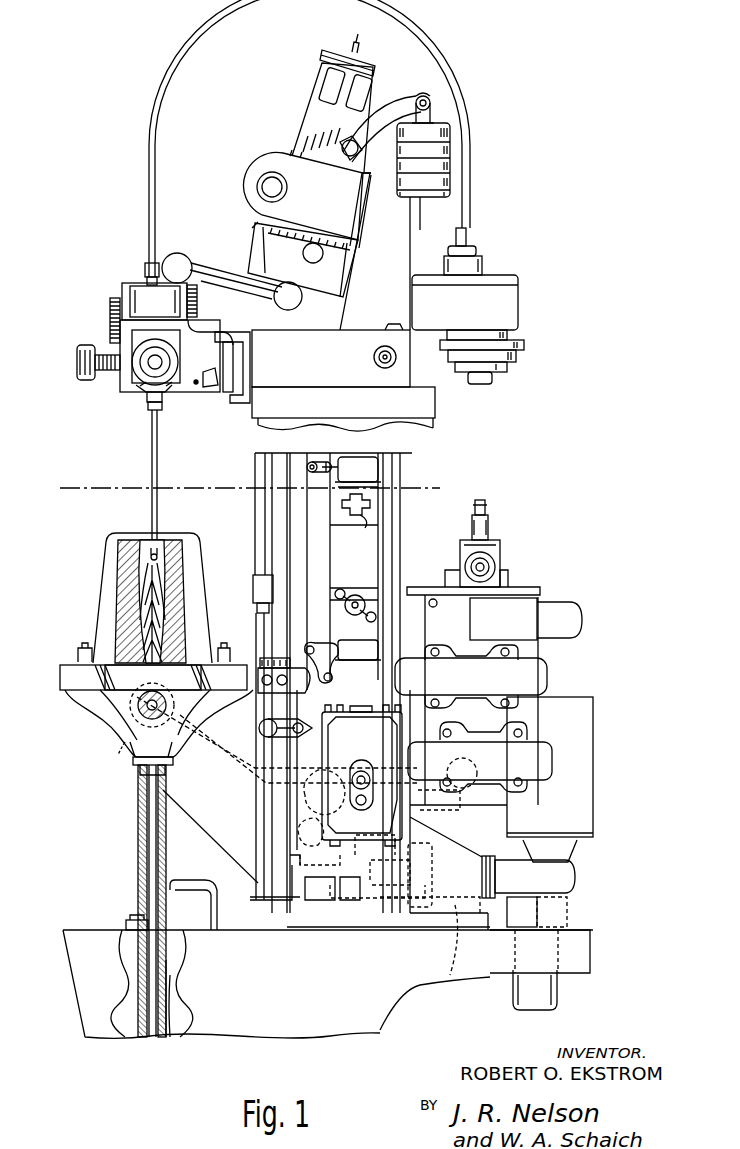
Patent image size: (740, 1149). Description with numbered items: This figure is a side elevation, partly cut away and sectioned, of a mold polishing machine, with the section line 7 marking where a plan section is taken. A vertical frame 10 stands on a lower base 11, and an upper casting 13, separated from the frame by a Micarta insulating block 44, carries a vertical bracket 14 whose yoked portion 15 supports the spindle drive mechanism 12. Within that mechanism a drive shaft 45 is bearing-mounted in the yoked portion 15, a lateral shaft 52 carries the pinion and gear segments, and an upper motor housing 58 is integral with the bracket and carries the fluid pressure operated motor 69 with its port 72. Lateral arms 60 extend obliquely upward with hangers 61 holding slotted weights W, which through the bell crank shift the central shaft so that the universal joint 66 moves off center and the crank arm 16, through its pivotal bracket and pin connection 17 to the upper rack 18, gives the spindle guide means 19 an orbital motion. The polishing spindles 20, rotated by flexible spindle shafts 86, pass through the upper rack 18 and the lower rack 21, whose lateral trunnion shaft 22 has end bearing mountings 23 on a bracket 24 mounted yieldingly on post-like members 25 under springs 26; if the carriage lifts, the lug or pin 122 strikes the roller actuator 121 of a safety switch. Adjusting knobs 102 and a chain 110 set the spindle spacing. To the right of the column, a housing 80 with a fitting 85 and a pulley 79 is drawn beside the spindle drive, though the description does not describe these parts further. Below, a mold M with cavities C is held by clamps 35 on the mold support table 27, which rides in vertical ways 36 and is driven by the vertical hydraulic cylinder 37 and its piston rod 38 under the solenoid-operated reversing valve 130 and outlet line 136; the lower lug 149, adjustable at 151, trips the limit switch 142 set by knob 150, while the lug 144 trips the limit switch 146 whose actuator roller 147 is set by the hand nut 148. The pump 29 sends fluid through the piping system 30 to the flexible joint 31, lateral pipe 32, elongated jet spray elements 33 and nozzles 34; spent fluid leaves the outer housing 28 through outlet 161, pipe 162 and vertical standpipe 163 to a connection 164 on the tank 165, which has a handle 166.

The vertical frame 10 is at (355, 682).
The lower base 11 is at (320, 998).
The spindle drive mechanism 12 is at (328, 173).
The upper casting 13 is at (330, 373).
The vertical bracket 14 is at (393, 286).
The yoked portion 15 is at (331, 208).
The crank arm 16 is at (222, 272).
The pivotal bracket and pin connection 17 is at (182, 256).
The upper rack 18 is at (165, 311).
The spindle guide means 19 is at (156, 358).
The polishing spindles 20 is at (151, 465).
The lower rack 21 is at (110, 336).
The lateral trunnion shaft 22 is at (158, 408).
The end bearing mountings 23 is at (138, 388).
The bracket 24 is at (208, 370).
The post-like members 25 is at (246, 348).
The springs 26 is at (199, 305).
The mold support table 27 is at (62, 678).
The outer housing 28 is at (150, 734).
The pump 29 is at (543, 999).
The piping system 30 is at (413, 810).
The flexible joint 31 is at (122, 762).
The lateral pipe 32 is at (115, 752).
The elongated jet spray elements 33 is at (137, 704).
The nozzles 34 is at (165, 625).
The clamps 35 is at (78, 656).
The vertical ways 36 is at (278, 636).
The vertical hydraulic cylinder 37 is at (258, 542).
The piston rod 38 is at (262, 653).
The Micarta insulating block 44 is at (330, 416).
The drive shaft 45 is at (279, 194).
The lateral shaft 52 is at (320, 260).
The upper motor housing 58 is at (315, 108).
The lateral arms 60 is at (394, 92).
The hangers 61 is at (445, 161).
The universal joint 66 is at (299, 306).
The fluid pressure operated motor 69 is at (378, 70).
The port 72 is at (358, 44).
The pulley 79 is at (524, 365).
The drive housing 80 is at (473, 324).
The tube fitting 85 is at (470, 258).
The flexible spindle shafts 86 is at (149, 192).
The adjusting knobs 102 is at (76, 366).
The chain 110 is at (120, 343).
The roller actuator 121 is at (222, 368).
The lug or pin 122 is at (196, 386).
The solenoid-operated reversing valve 130 is at (502, 568).
The outlet line 136 is at (430, 585).
The limit switch 142 is at (372, 658).
The lug 144 is at (335, 682).
The limit switch 146 is at (372, 479).
The actuator roller 147 is at (315, 460).
The hand nut 148 is at (354, 522).
The lug 149 is at (313, 728).
The knob 150 is at (370, 578).
The adjustment 151 is at (258, 732).
The outlet 161 is at (133, 776).
The pipe 162 is at (167, 968).
The vertical standpipe 163 is at (167, 855).
The connection 164 is at (133, 920).
The tank 165 is at (172, 1000).
The handle 166 is at (193, 884).
The section line 7- 7 is at (445, 488).
The cavities C is at (163, 582).
The mold M is at (110, 578).
The slotted weights W is at (423, 150).